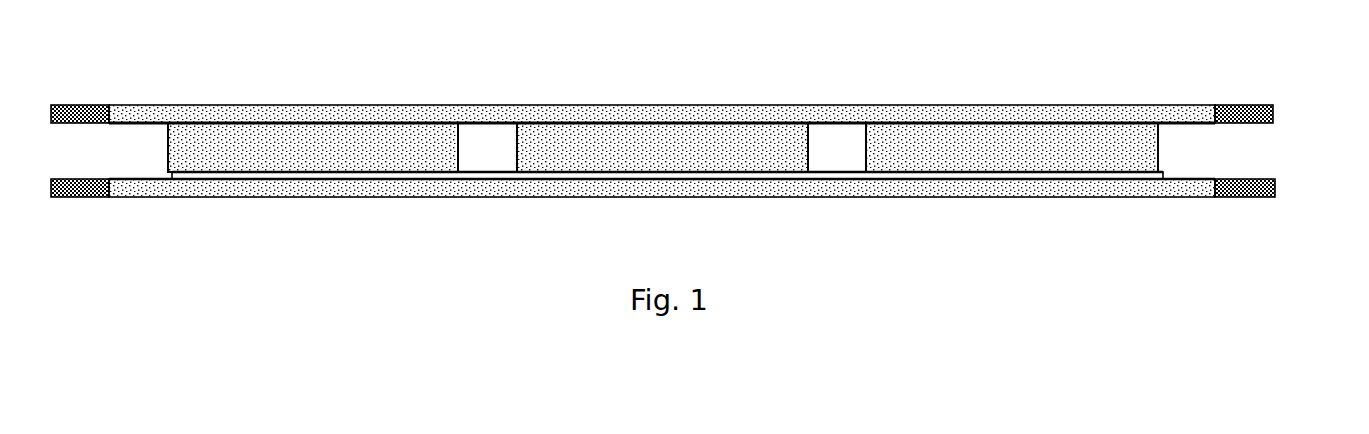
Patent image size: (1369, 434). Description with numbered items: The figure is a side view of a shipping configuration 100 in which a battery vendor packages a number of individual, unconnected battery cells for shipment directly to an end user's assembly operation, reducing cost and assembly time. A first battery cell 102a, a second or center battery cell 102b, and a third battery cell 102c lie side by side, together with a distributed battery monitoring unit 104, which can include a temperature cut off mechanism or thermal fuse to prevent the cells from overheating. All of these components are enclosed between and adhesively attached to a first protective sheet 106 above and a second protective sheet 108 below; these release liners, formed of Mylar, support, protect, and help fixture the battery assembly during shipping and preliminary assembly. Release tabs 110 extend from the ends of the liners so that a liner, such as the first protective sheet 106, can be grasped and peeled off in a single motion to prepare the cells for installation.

The shipping configuration 100 is at (933, 238).
The first battery cell 102a is at (313, 147).
The second battery cell 102b is at (662, 147).
The third battery cell 102c is at (1012, 147).
The distributed battery monitoring unit 104 is at (668, 177).
The first protective sheet 106 is at (328, 105).
The second protective sheet 108 is at (375, 198).
The release tabs 110 is at (1262, 108).